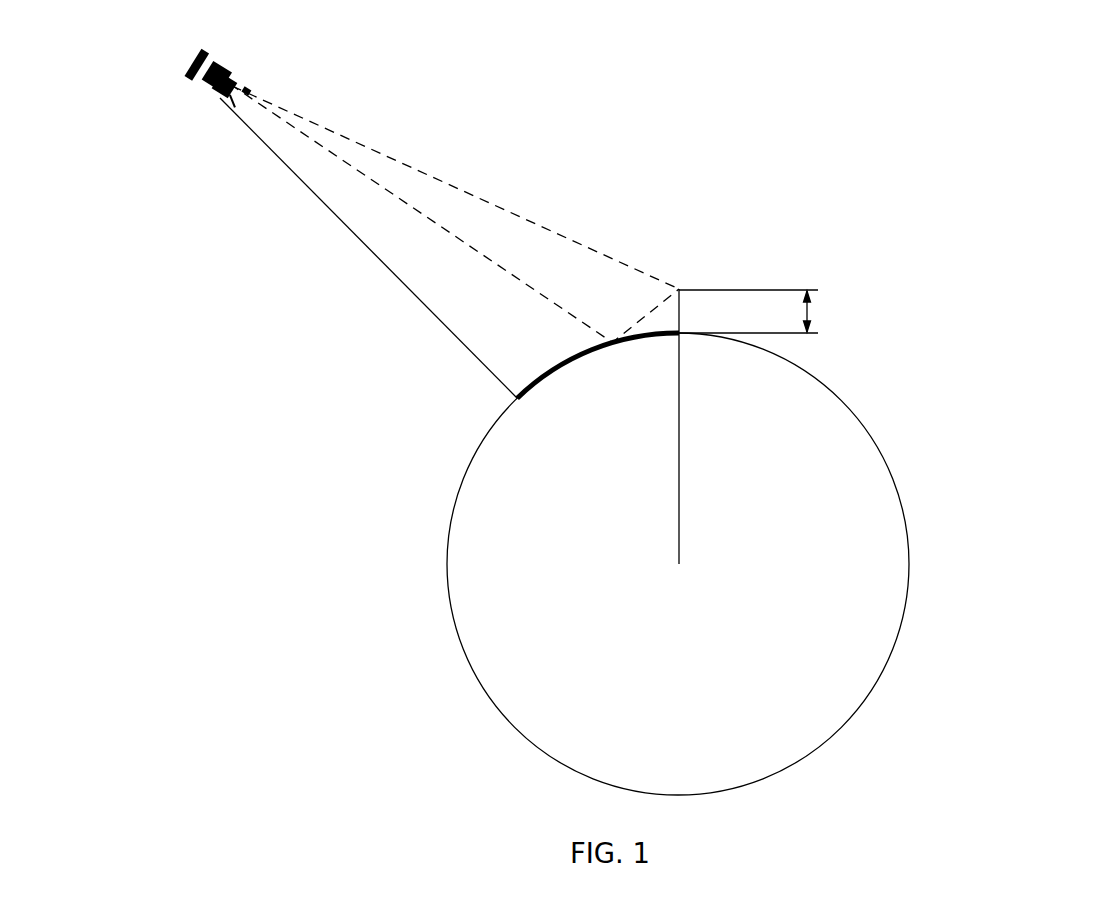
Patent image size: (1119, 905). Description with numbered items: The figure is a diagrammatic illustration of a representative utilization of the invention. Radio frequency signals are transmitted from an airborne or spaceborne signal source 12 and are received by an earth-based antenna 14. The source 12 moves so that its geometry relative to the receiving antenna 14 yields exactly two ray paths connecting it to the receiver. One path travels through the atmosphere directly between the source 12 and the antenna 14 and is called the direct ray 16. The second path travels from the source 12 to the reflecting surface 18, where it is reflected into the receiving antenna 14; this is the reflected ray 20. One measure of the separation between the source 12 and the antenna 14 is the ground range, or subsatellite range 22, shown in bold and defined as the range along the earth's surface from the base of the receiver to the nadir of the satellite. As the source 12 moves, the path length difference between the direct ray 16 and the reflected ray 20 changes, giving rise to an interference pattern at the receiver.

The signal source 12 is at (320, 70).
The antenna 14 is at (884, 288).
The direct ray 16 is at (455, 183).
The reflecting surface 18 is at (476, 529).
The reflected ray 20 is at (476, 213).
The subsatellite range 22 is at (408, 365).